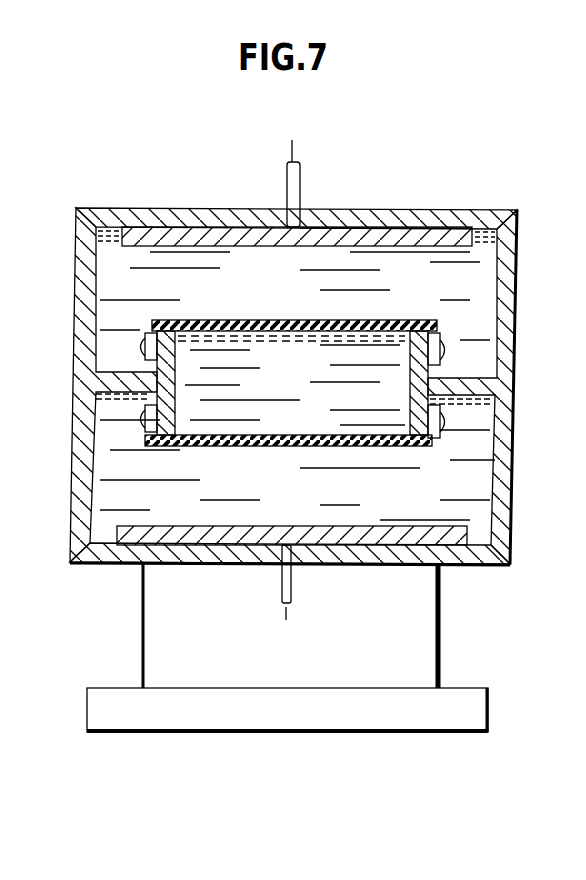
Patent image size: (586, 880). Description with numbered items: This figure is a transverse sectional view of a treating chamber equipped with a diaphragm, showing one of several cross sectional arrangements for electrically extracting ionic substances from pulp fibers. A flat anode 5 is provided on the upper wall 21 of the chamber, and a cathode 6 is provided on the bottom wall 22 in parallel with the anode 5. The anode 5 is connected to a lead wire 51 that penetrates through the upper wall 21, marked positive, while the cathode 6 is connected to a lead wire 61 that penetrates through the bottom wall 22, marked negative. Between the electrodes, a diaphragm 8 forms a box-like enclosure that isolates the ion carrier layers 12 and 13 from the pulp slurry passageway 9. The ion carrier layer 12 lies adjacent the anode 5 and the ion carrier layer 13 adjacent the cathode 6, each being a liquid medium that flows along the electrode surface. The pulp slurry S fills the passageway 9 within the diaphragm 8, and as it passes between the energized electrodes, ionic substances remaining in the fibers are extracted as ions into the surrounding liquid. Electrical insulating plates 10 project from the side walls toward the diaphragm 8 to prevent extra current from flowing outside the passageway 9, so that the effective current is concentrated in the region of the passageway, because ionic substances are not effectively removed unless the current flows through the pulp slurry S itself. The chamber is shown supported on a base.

The anode 5 is at (138, 236).
The cathode 6 is at (140, 540).
The diaphragm 8 is at (416, 321).
The pulp slurry passageway 9 is at (362, 380).
The electrical insulating plate 10 is at (125, 383).
The ion carrier layer 12 is at (389, 232).
The ion carrier layer 13 is at (135, 482).
The upper wall 21 is at (194, 214).
The bottom wall 22 is at (226, 557).
The lead wire 51 is at (299, 186).
The lead wire 61 is at (290, 578).
The pulp slurry S is at (216, 333).